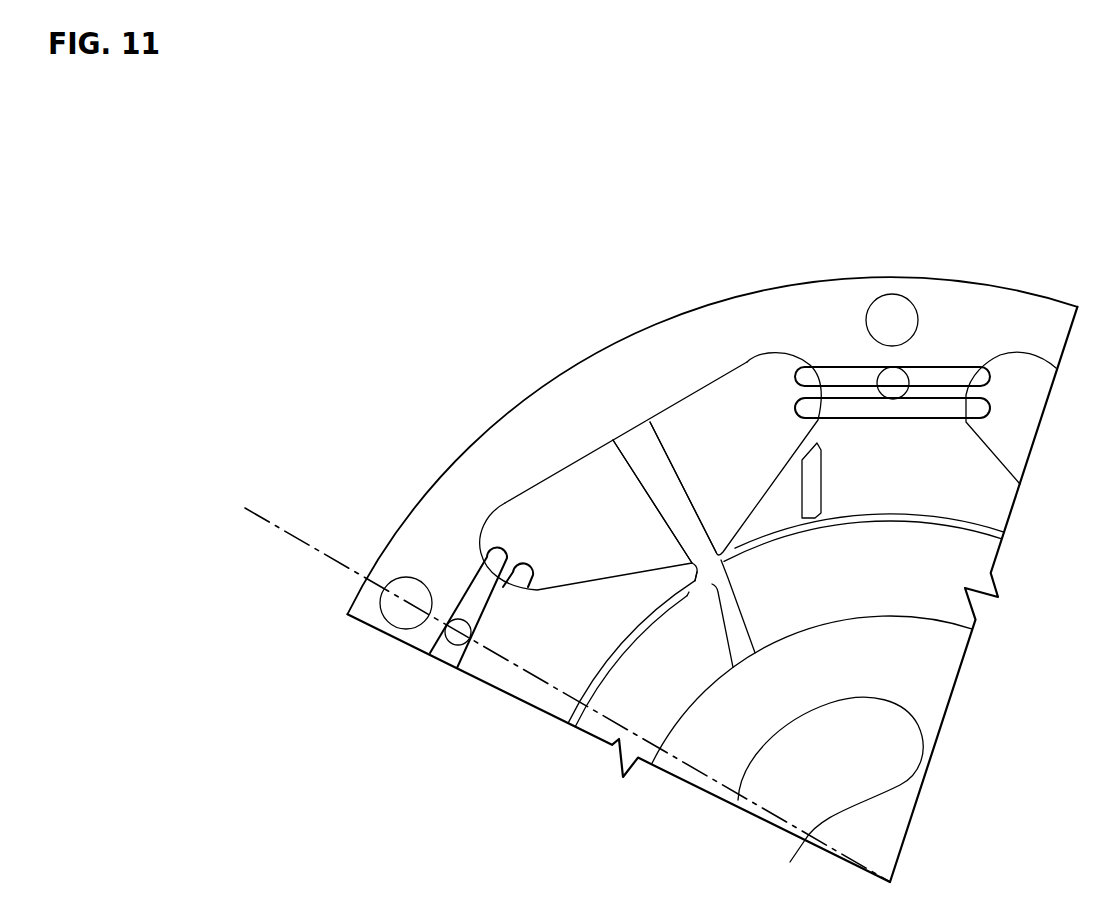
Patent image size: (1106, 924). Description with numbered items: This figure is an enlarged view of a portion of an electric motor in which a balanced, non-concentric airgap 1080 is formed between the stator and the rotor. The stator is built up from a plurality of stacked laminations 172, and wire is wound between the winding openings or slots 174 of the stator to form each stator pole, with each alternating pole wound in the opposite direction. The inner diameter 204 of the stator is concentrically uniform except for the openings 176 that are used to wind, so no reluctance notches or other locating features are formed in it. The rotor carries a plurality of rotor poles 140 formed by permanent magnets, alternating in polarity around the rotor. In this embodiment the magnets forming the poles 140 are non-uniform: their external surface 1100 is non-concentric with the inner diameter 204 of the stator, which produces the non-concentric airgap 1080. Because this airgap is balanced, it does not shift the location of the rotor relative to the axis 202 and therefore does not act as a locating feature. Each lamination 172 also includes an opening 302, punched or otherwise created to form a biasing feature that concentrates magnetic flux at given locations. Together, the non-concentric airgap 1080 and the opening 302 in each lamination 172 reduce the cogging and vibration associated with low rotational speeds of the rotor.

The rotor poles 140 is at (921, 580).
The laminations 172 is at (815, 312).
The winding openings or slots 174 is at (767, 377).
The openings used to wind 176 is at (709, 558).
The magnetic axis 202 is at (273, 523).
The inner diameter 204 is at (700, 602).
The opening 302 is at (811, 479).
The balanced, non-concentric airgap 1080 is at (734, 562).
The external surface 1100 is at (648, 605).